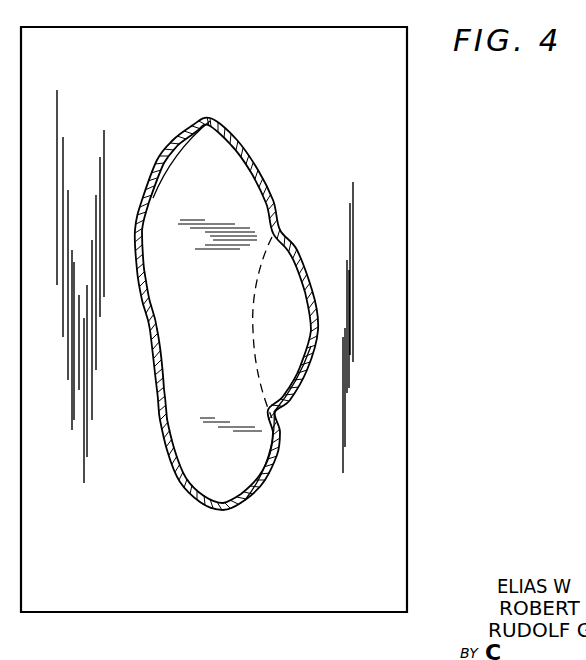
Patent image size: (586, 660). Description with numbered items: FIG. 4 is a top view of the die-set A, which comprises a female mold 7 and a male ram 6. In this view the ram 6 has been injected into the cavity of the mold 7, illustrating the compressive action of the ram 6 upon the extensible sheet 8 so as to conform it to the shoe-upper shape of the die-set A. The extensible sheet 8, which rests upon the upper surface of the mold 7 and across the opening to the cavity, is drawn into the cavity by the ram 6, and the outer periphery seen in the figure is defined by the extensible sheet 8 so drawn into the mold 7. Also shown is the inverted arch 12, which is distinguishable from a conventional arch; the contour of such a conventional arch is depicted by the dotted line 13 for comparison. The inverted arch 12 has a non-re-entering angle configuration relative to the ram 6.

The male ram 6 is at (220, 326).
The female mold 7 is at (393, 546).
The extensible sheet 8 is at (182, 492).
The inverted arch 12 is at (305, 350).
The dotted line 13 is at (255, 282).
The die-set A is at (258, 158).